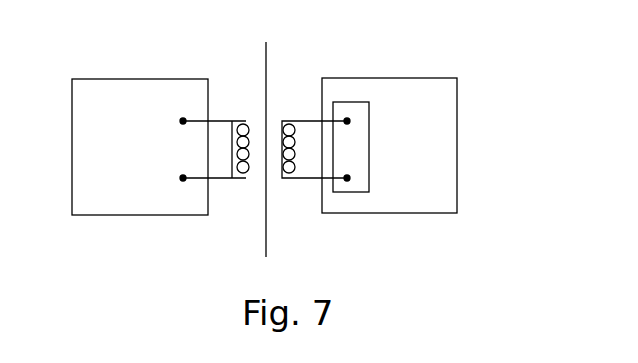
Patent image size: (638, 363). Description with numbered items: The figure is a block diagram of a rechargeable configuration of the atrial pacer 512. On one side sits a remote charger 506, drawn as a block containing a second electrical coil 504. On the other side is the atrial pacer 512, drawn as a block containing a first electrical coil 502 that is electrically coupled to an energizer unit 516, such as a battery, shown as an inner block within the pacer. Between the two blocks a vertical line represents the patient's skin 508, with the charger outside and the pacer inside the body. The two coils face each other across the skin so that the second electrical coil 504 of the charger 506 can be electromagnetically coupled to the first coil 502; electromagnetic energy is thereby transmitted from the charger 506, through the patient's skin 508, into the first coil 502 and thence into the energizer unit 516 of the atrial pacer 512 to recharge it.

The first electrical coil 502 is at (300, 178).
The second electrical coil 504 is at (232, 121).
The remote charger 506 is at (135, 215).
The patient's skin 508 is at (266, 257).
The atrial pacer 512 is at (437, 78).
The energizer unit 516 is at (357, 102).